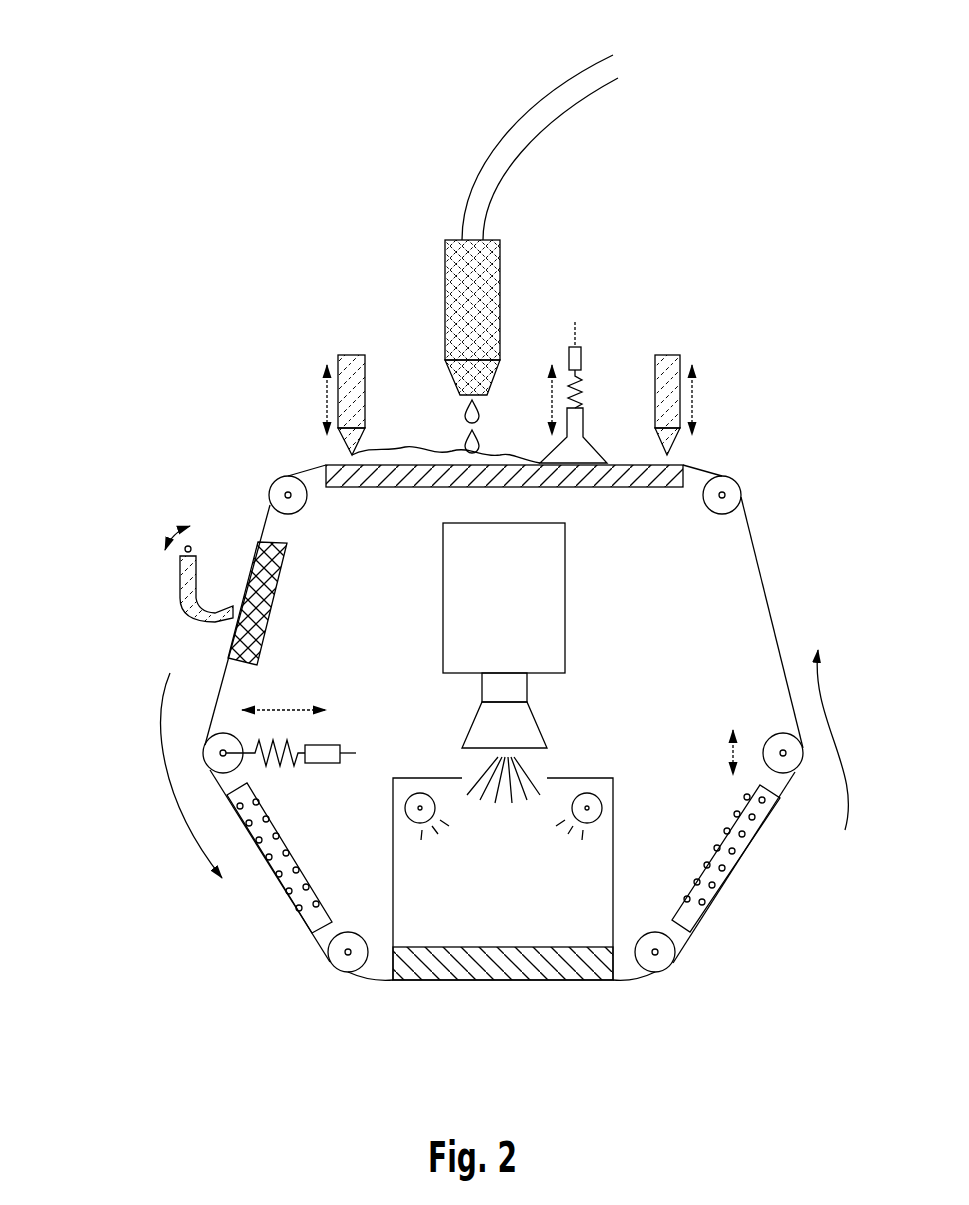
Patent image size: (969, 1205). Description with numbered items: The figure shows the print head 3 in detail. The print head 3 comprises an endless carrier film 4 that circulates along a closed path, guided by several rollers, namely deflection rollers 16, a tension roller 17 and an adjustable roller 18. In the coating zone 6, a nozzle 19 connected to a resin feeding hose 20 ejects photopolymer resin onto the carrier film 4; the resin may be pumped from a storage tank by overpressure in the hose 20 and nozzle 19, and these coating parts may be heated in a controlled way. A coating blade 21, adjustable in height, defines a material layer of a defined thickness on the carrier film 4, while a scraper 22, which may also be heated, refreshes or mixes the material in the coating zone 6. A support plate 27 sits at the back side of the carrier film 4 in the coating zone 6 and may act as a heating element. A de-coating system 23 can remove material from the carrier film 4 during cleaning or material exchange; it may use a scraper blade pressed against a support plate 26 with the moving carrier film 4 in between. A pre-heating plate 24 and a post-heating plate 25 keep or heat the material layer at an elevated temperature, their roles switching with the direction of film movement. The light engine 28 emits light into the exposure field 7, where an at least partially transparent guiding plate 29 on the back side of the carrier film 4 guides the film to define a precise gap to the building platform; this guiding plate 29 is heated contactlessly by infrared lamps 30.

The print head 3 is at (175, 418).
The endless carrier film 4 is at (765, 578).
The coating zone 6 is at (670, 258).
The exposure field 7 is at (457, 992).
The deflection rollers 16 is at (288, 495).
The tension roller 17 is at (218, 748).
The adjustable roller 18 is at (783, 753).
The nozzle 19 is at (478, 318).
The resin feeding hose 20 is at (520, 130).
The coating blade 21 is at (350, 378).
The scraper 22 is at (575, 450).
The de-coating system 23 is at (222, 592).
The pre-heating plate 24 is at (280, 887).
The post-heating plate 25 is at (708, 893).
The support plate 26 is at (275, 583).
The support plate 27 is at (410, 477).
The light engine 28 is at (530, 607).
The guiding plate 29 is at (530, 965).
The infrared lamps 30 is at (420, 808).